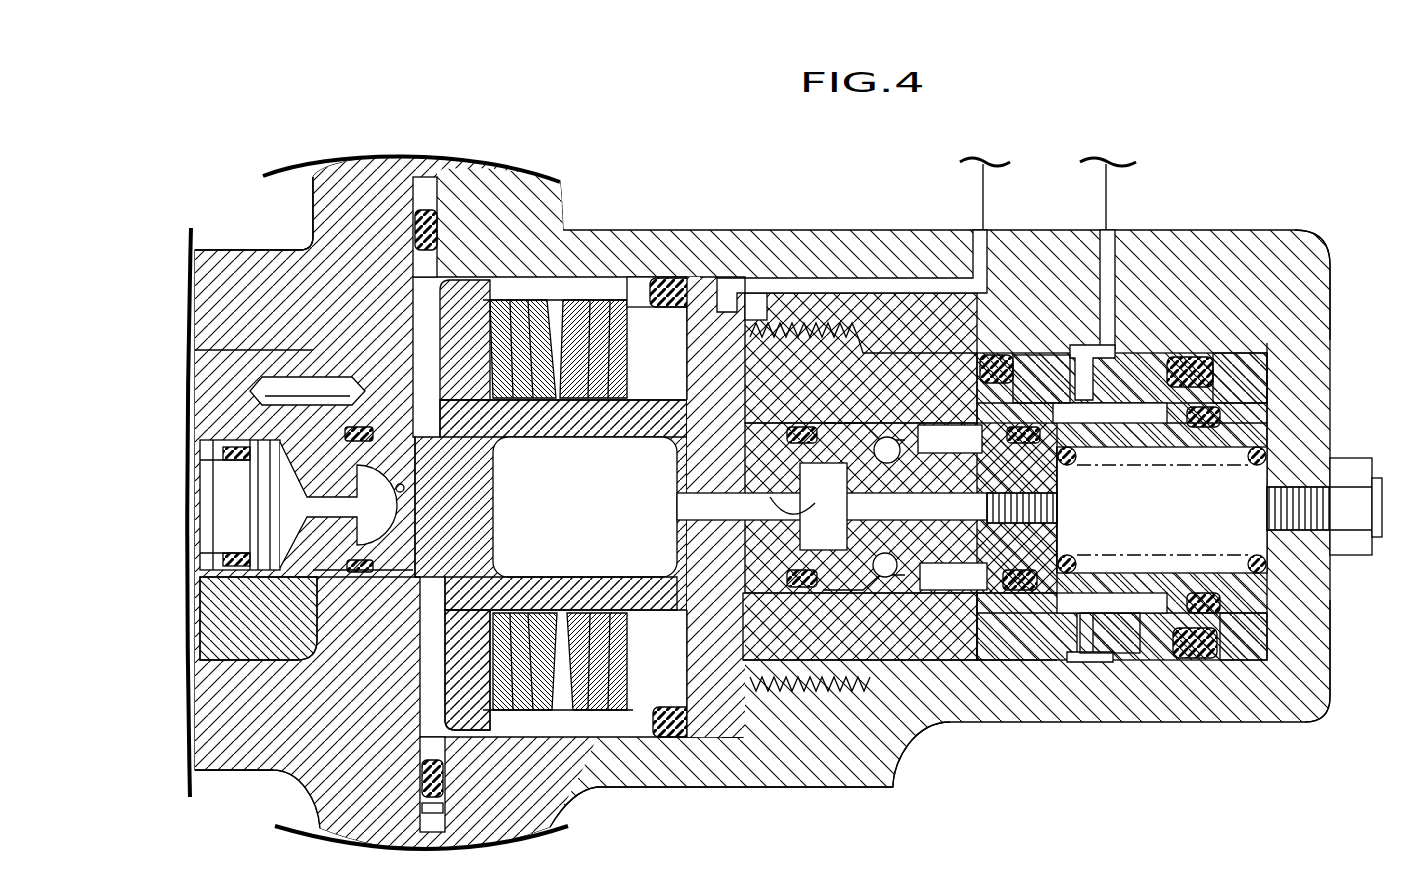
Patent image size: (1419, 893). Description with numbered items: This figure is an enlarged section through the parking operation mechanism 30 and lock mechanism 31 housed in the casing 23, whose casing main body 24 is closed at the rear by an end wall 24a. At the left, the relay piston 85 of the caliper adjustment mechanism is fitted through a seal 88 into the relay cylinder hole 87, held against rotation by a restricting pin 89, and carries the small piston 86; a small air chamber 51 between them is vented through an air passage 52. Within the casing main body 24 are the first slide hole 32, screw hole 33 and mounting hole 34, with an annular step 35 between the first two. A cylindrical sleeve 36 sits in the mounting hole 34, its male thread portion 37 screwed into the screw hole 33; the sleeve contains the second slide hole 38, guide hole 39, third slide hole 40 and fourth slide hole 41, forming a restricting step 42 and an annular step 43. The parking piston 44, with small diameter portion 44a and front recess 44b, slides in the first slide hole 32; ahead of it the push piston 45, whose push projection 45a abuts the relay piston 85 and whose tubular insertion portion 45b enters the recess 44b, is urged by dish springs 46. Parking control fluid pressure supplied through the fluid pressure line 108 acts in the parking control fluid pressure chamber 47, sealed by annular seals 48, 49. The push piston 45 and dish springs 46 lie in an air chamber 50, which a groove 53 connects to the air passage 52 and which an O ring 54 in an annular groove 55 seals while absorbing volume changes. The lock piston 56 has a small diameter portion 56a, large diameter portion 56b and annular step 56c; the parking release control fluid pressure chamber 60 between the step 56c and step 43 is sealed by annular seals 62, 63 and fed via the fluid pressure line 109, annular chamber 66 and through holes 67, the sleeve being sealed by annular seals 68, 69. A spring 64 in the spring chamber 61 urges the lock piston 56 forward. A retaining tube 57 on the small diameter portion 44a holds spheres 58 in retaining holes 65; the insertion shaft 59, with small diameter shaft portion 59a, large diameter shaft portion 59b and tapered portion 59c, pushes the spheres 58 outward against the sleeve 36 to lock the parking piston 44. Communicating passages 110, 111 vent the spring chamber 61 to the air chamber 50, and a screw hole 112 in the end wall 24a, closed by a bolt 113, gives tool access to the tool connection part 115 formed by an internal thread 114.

The casing 23 is at (855, 792).
The casing main body 24 is at (785, 768).
The end wall 24a is at (1320, 335).
The parking operation mechanism 30 is at (622, 720).
The lock mechanism 31 is at (1318, 705).
The first slide hole 32 is at (535, 290).
The screw hole 33 is at (773, 665).
The mounting hole 34 is at (1247, 352).
The annular step 35 is at (738, 740).
The cylindrical sleeve 36 is at (930, 640).
The male thread portion 37 is at (762, 300).
The second slide hole 38 is at (740, 400).
The guide hole 39 is at (980, 600).
The third slide hole 40 is at (1005, 665).
The fourth slide hole 41 is at (1165, 662).
The restricting step 42 is at (845, 588).
The annular step 43 is at (1088, 625).
The parking piston 44 is at (712, 742).
The small diameter portion 44a is at (790, 625).
The recess 44b is at (653, 598).
The push piston 45 is at (470, 287).
The push projection 45a is at (442, 612).
The tubular insertion portion 45b is at (688, 430).
The dish springs 46 is at (590, 623).
The parking control fluid pressure chamber 47 is at (722, 277).
The annular seal 48 is at (643, 280).
The annular seal 49 is at (833, 520).
The air chamber 50 is at (510, 815).
The small air chamber 51 is at (295, 505).
The air passage 52 is at (312, 512).
The groove 53 is at (404, 488).
The O ring 54 is at (358, 828).
The annular groove 55 is at (412, 810).
The lock piston 56 is at (1187, 660).
The small diameter portion 56a is at (1075, 662).
The large diameter portion 56b is at (1268, 345).
The annular step 56c is at (1193, 357).
The retaining tube 57 is at (888, 436).
The spheres 58 is at (795, 305).
The insertion shaft 59 is at (950, 452).
The small diameter shaft portion 59a is at (870, 437).
The large diameter shaft portion 59b is at (1083, 370).
The tapered portion 59c is at (885, 433).
The parking release control fluid pressure chamber 60 is at (1130, 605).
The spring chamber 61 is at (1155, 532).
The annular seal 62 is at (1072, 442).
The annular seal 63 is at (1205, 598).
The spring 64 is at (1265, 455).
The retaining holes 65 is at (900, 490).
The annular chamber 66 is at (1100, 347).
The through holes 67 is at (1112, 445).
The annular seal 68 is at (996, 355).
The annular seal 69 is at (1240, 620).
The relay piston 85 is at (215, 345).
The small piston 86 is at (205, 460).
The relay cylinder hole 87 is at (352, 572).
The seal 88 is at (368, 428).
The restricting pin 89 is at (293, 383).
The fluid pressure line 108 is at (810, 290).
The fluid pressure line 109 is at (1105, 230).
The communicating passage 110 is at (892, 517).
The communicating passage 111 is at (808, 506).
The screw hole 112 is at (1295, 492).
The bolt 113 is at (1355, 545).
The internal thread 114 is at (1068, 527).
The tool connection part 115 is at (1060, 502).